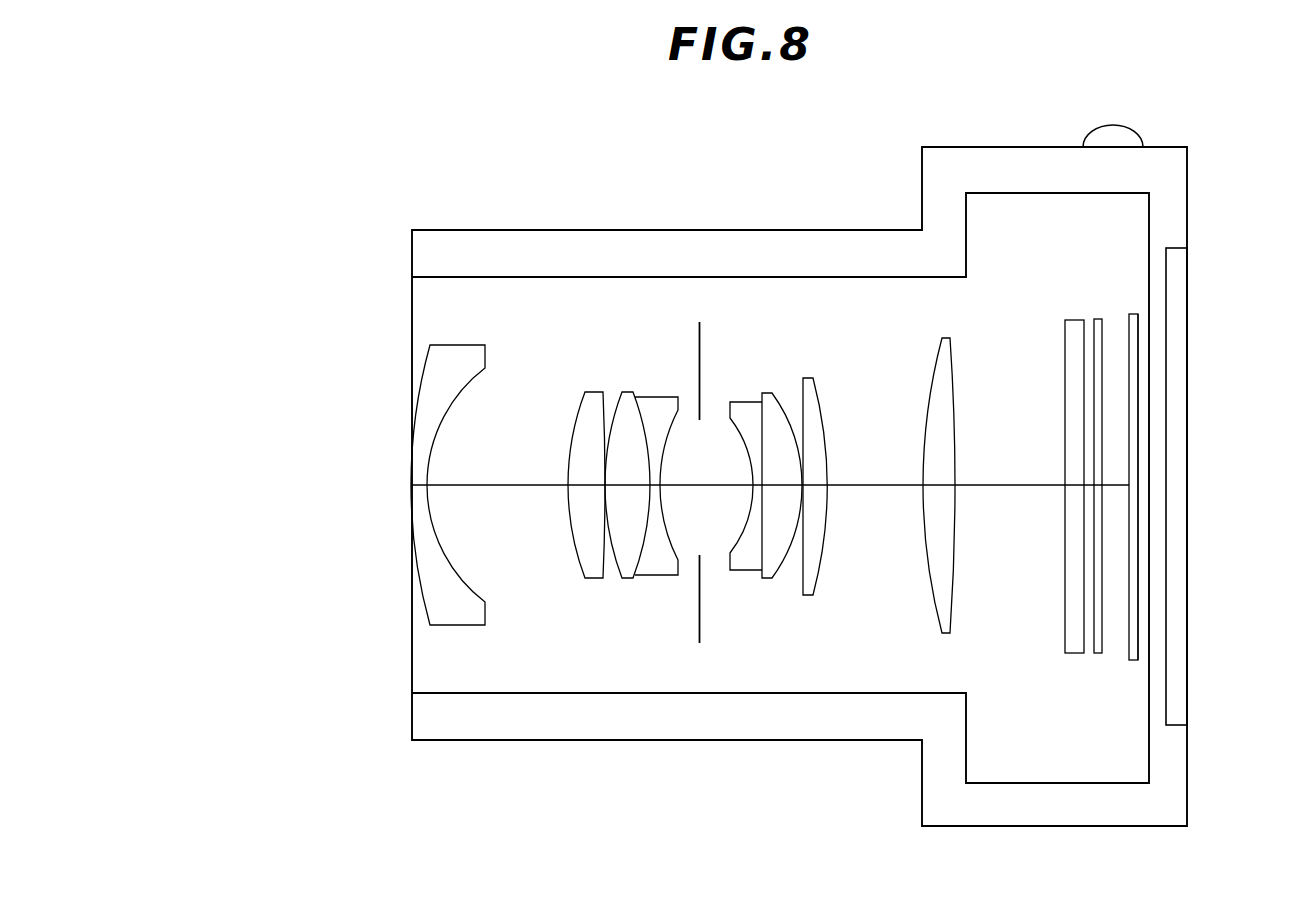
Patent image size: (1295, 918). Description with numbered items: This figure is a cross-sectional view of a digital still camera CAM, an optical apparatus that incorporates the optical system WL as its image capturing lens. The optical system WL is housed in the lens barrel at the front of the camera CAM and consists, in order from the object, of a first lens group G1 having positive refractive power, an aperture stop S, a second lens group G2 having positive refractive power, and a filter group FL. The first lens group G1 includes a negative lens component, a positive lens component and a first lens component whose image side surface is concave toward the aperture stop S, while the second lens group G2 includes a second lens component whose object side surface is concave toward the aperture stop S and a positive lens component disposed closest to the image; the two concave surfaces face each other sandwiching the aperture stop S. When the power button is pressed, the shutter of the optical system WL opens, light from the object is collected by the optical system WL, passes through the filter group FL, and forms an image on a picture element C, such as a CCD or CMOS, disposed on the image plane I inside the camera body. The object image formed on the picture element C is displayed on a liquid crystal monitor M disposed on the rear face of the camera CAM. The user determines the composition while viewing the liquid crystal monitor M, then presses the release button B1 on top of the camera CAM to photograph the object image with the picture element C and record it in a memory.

The digital still camera CAM is at (334, 154).
The release button B1 is at (1113, 124).
The optical system WL is at (796, 325).
The first lens group G1 is at (682, 628).
The second lens group G2 is at (971, 630).
The aperture stop S is at (700, 645).
The filter group FL is at (1113, 665).
The picture element C is at (1133, 661).
The image plane I is at (1129, 323).
The liquid crystal monitor M is at (1182, 310).